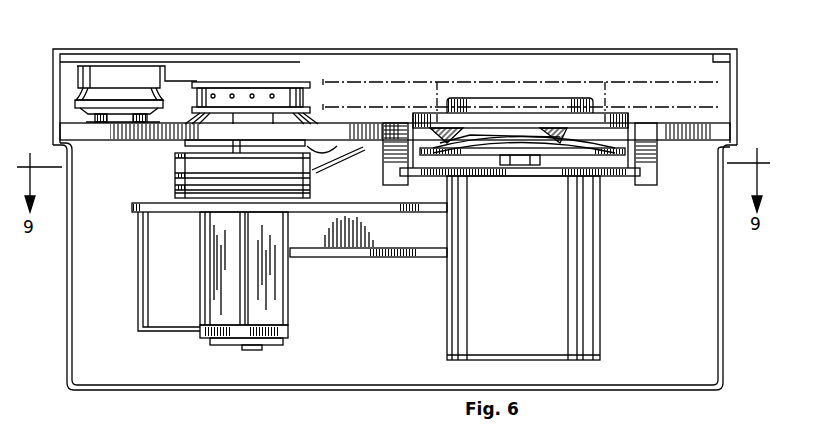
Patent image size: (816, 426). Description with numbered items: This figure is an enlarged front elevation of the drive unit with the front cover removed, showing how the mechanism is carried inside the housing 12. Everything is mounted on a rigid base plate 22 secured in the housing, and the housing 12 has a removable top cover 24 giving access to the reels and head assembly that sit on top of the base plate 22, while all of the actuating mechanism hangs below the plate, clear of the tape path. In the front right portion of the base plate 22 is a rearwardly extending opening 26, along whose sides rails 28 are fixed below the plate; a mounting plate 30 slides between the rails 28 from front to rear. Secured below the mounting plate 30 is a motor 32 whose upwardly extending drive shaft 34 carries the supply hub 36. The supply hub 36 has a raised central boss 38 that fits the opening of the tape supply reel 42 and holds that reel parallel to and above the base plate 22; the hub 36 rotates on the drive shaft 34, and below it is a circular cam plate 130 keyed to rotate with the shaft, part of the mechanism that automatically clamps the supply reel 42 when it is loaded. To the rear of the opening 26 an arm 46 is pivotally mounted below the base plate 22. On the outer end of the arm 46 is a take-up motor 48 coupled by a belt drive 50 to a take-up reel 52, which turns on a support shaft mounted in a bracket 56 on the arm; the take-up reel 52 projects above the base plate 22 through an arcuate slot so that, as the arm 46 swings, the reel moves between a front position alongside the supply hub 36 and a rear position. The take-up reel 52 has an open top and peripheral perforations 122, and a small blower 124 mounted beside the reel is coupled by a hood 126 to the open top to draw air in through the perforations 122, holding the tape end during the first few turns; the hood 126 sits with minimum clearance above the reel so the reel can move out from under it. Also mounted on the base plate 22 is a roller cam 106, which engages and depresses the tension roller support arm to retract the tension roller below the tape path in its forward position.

The housing 12 is at (390, 388).
The base plate 22 is at (157, 140).
The top cover 24 is at (447, 50).
The opening 26 is at (657, 138).
The rails 28 is at (397, 182).
The mounting plate 30 is at (608, 176).
The motor 32 is at (580, 277).
The drive shaft 34 is at (523, 167).
The supply hub 36 is at (605, 120).
The raised central boss 38 is at (527, 100).
The tape supply reel 42 is at (418, 80).
The arm 46 is at (365, 243).
The take-up motor 48 is at (155, 277).
The belt drive 50 is at (175, 182).
The take-up reel 52 is at (289, 97).
The bracket 56 is at (280, 272).
The roller cam 106 is at (330, 158).
The peripheral perforations 122 is at (233, 95).
The blower 124 is at (117, 95).
The hood 126 is at (188, 68).
The cam plate 130 is at (472, 153).